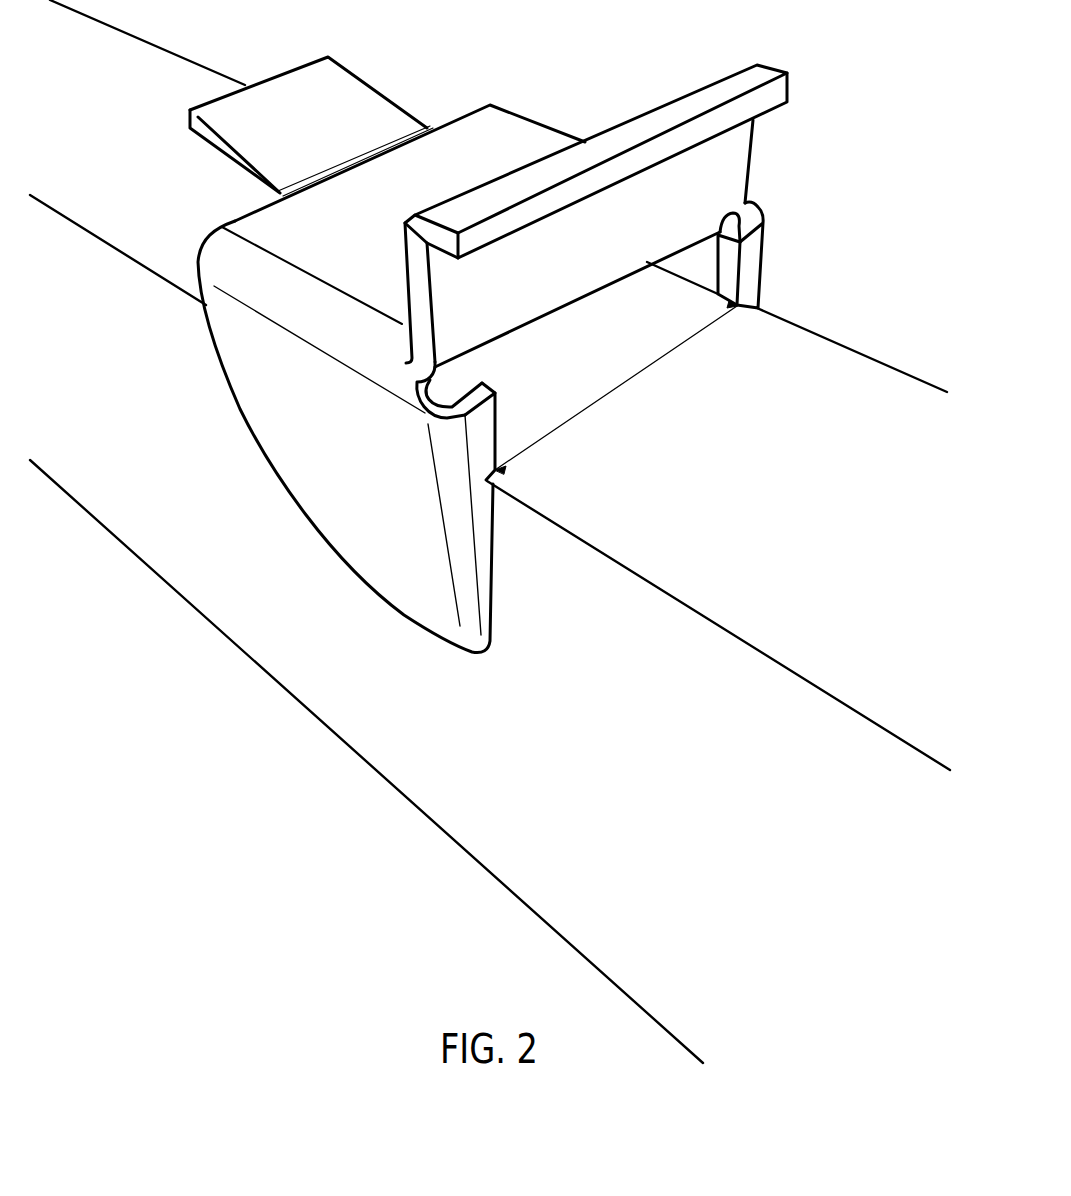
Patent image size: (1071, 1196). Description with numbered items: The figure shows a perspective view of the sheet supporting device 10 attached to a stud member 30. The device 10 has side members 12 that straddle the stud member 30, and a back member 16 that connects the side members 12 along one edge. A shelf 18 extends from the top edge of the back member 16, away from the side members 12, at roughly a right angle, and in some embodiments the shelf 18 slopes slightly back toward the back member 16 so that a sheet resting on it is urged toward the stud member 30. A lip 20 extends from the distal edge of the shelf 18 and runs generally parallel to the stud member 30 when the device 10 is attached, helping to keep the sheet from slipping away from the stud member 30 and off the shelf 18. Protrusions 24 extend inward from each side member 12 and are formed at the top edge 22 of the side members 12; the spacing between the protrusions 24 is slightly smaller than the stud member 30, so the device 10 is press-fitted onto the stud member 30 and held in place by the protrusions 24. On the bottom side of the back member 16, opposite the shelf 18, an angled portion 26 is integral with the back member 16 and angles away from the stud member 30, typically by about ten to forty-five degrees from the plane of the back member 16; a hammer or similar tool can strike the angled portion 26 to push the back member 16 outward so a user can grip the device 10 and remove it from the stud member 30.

The sheet supporting device 10 is at (687, 53).
The side members 12 is at (350, 459).
The back member 16 is at (378, 226).
The shelf 18 is at (607, 248).
The lip 20 is at (778, 90).
The top edge 22 is at (490, 416).
The protrusions 24 is at (487, 382).
The angled portion 26 is at (286, 95).
The stud member 30 is at (801, 483).